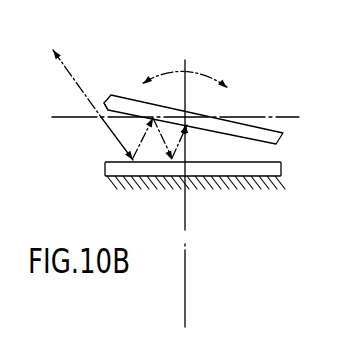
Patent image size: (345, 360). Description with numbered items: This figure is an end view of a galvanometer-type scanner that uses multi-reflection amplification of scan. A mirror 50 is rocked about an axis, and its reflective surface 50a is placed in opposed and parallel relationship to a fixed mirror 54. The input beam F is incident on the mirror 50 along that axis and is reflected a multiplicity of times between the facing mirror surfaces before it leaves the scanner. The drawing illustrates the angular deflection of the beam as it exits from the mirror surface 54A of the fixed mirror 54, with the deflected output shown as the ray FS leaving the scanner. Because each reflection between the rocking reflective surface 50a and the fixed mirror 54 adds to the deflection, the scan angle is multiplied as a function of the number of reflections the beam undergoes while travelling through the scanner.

The mirror 50 is at (132, 100).
The reflective surface 50a is at (107, 109).
The fixed mirror 54 is at (282, 166).
The mirror surface 54A is at (124, 162).
The fluorescence signal ray FS is at (87, 99).
The input beam F is at (187, 258).